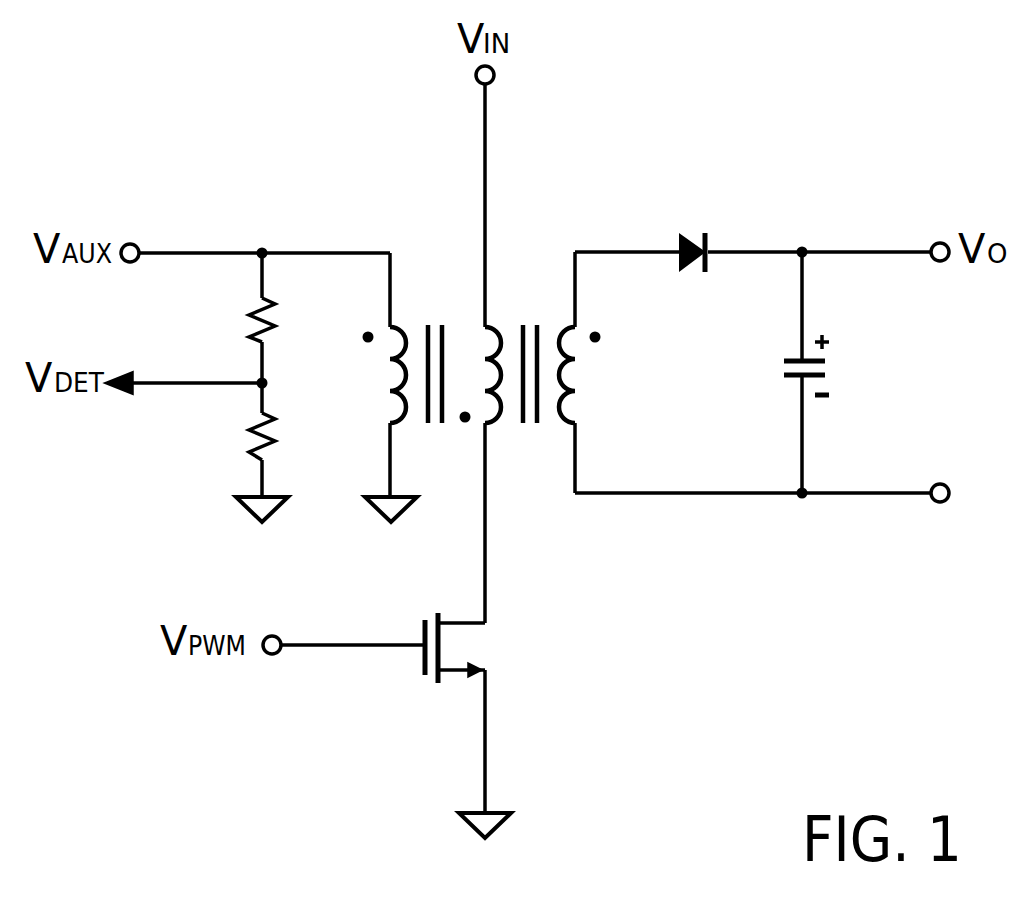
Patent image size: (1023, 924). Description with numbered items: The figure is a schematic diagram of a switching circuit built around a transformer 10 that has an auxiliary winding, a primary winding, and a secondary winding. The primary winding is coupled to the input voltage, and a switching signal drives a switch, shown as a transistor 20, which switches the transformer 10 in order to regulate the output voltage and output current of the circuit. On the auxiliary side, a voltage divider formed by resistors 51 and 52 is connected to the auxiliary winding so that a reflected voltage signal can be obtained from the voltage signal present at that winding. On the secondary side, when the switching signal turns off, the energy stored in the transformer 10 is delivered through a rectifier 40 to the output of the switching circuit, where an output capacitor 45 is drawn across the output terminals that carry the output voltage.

The transformer 10 is at (510, 257).
The transistor 20 is at (442, 693).
The rectifier 40 is at (693, 233).
The output capacitor 45 is at (833, 368).
The resistor 51 is at (240, 311).
The resistor 52 is at (240, 439).